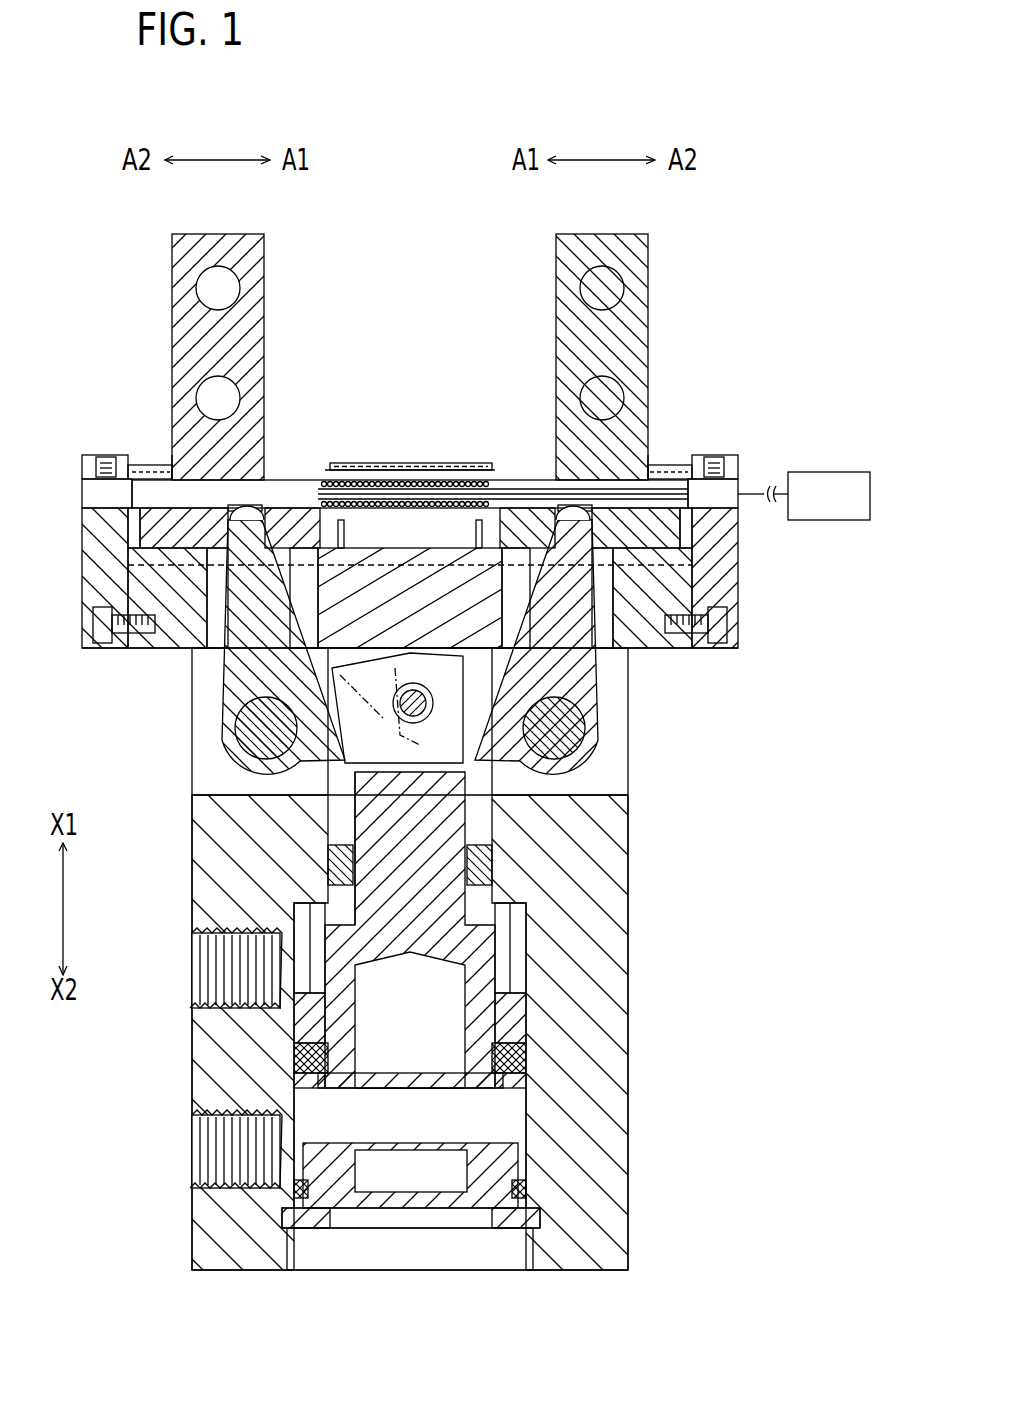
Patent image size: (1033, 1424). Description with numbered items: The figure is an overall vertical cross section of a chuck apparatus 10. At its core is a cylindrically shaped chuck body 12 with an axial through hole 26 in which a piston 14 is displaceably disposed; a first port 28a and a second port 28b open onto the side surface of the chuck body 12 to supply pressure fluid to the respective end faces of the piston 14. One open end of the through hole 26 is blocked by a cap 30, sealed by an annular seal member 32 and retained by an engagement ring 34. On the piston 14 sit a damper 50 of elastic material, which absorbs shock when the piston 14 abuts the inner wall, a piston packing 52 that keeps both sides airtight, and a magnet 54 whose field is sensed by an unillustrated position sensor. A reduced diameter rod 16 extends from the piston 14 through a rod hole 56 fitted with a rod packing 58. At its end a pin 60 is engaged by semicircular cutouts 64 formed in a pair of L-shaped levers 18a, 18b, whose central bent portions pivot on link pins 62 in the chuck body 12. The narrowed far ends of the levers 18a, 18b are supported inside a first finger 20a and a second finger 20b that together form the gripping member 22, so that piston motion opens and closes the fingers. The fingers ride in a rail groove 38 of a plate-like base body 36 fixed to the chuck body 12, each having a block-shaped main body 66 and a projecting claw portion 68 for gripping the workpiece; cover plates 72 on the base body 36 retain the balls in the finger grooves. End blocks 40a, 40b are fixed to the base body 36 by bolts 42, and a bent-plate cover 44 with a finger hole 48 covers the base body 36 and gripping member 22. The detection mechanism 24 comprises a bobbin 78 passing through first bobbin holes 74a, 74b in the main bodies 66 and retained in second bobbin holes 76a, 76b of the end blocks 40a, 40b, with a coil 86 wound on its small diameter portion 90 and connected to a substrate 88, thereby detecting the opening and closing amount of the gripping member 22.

The chuck apparatus 10 is at (779, 117).
The chuck body 12 is at (577, 1274).
The piston 14 is at (408, 1090).
The rod 16 is at (503, 960).
The lever 18a is at (403, 647).
The lever 18b is at (605, 722).
The first finger 20a is at (356, 353).
The second finger 20b is at (657, 272).
The gripping member 22 is at (292, 218).
The detection mechanism 24 is at (421, 457).
The through hole 26 is at (522, 1130).
The first port 28a is at (210, 960).
The second port 28b is at (210, 1150).
The cap 30 is at (420, 1228).
The annular seal member 32 is at (527, 1190).
The engagement ring 34 is at (315, 1228).
The base body 36 is at (668, 642).
The rail groove 38 is at (190, 530).
The end block 40a is at (100, 580).
The end block 40b is at (715, 578).
The bolts 42 is at (93, 624).
The cover 44 is at (470, 484).
The finger hole 48 is at (176, 455).
The damper 50 is at (505, 932).
The piston packing 52 is at (296, 1058).
The magnet 54 is at (296, 1020).
The rod hole 56 is at (355, 830).
The rod packing 58 is at (335, 858).
The pin 60 is at (225, 692).
The link pins 62 is at (245, 745).
The cutouts 64 is at (436, 700).
The main bodies 66 is at (300, 530).
The claw portions 68 is at (265, 300).
The cover plates 72 is at (135, 494).
The first bobbin hole 74a is at (270, 478).
The first bobbin hole 74b is at (556, 455).
The second bobbin hole 76a is at (90, 462).
The second bobbin hole 76b is at (745, 480).
The bobbin 78 is at (140, 468).
The coil 86 is at (357, 468).
The substrate 88 is at (838, 520).
The small diameter portion 90 is at (390, 465).